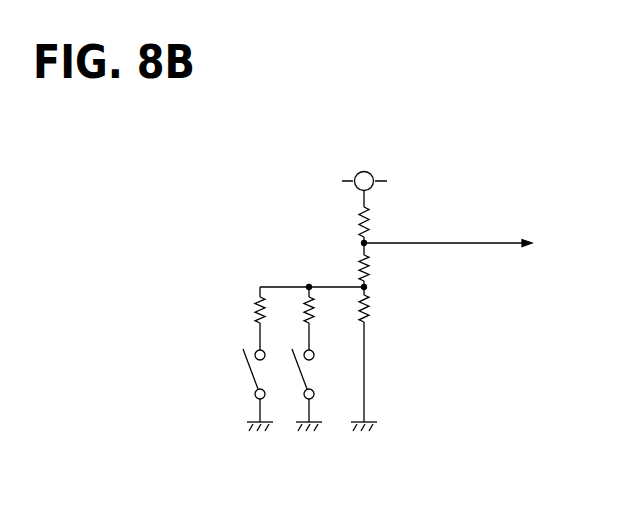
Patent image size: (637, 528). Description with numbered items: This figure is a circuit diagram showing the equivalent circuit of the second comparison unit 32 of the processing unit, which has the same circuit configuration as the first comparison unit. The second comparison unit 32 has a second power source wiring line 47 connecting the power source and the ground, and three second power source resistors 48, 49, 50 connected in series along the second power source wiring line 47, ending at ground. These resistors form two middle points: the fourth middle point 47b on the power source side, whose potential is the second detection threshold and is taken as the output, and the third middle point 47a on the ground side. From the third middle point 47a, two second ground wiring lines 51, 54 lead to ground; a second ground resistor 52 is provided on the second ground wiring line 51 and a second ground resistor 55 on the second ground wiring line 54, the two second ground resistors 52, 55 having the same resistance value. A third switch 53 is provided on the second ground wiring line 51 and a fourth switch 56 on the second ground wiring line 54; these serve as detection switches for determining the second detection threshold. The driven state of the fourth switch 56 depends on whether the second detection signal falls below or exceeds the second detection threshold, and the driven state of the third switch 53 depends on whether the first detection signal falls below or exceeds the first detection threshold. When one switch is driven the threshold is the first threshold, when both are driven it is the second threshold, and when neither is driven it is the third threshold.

The second comparison unit 32 is at (434, 158).
The second power source wiring line 47 is at (365, 392).
The third middle point 47a is at (370, 298).
The fourth middle point 47b is at (362, 242).
The second power source resistor 48 is at (370, 210).
The second power source resistor 49 is at (370, 258).
The second power source resistor 50 is at (368, 323).
The second ground wiring line 51 is at (314, 338).
The second ground resistor 52 is at (305, 303).
The third switch 53 is at (292, 353).
The second ground wiring line 54 is at (256, 331).
The second ground resistor 55 is at (256, 300).
The fourth switch 56 is at (244, 362).